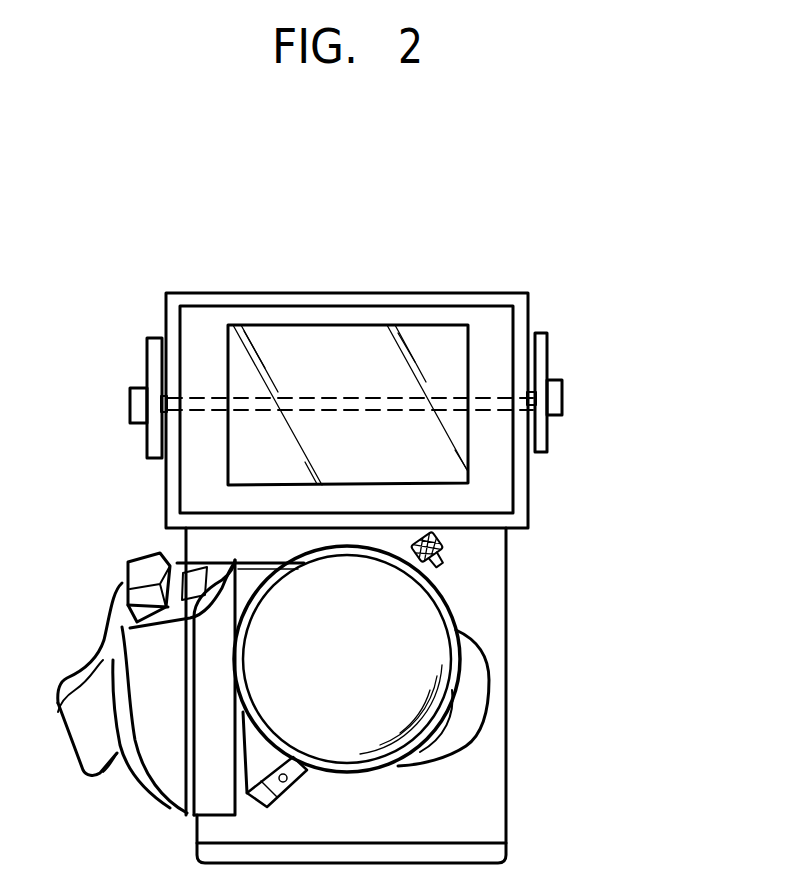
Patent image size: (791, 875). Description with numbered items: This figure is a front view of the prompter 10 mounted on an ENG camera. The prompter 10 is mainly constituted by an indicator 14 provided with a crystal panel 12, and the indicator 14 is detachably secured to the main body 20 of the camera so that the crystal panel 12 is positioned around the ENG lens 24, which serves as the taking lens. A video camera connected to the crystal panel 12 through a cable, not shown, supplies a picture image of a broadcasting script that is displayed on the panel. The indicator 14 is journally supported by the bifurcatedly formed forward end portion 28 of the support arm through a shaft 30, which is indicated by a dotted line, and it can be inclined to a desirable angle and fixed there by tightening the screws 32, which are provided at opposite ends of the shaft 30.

The prompter 10 is at (265, 292).
The crystal panel 12 is at (323, 331).
The indicator 14 is at (394, 300).
The main body 20 is at (508, 662).
The ENG lens 24 is at (450, 603).
The bifurcatedly formed forward end portion 28 is at (152, 360).
The shaft 30 is at (495, 392).
The screws 32 is at (137, 407).